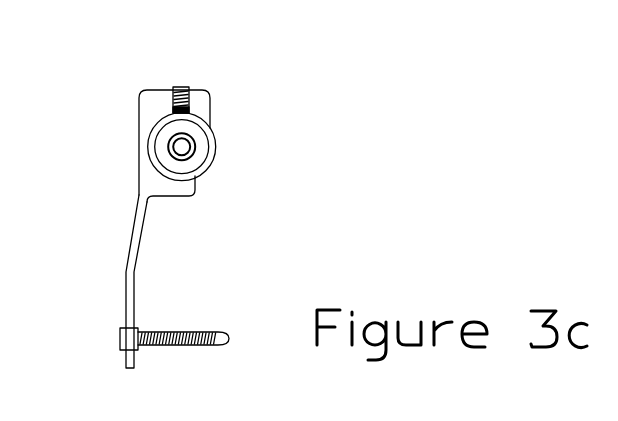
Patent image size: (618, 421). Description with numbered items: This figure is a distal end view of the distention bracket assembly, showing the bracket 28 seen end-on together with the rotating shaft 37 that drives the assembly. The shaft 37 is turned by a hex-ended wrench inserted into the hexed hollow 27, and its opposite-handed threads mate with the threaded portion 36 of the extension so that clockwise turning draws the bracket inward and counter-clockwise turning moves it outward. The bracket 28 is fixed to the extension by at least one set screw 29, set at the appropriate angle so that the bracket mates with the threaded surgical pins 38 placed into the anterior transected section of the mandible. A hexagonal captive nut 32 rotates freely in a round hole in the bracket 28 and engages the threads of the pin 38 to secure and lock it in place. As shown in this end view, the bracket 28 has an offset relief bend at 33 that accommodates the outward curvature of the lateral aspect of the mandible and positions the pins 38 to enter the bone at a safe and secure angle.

The hexed hollow 27 is at (236, 158).
The bracket 28 is at (122, 124).
The set screw 29 is at (225, 72).
The hexagonal captive nut 32 is at (82, 360).
The offset relief bend 33 is at (85, 281).
The threaded portion of extension 36 is at (225, 140).
The rotating shaft 37 is at (231, 175).
The threaded surgical pin 38 is at (207, 319).